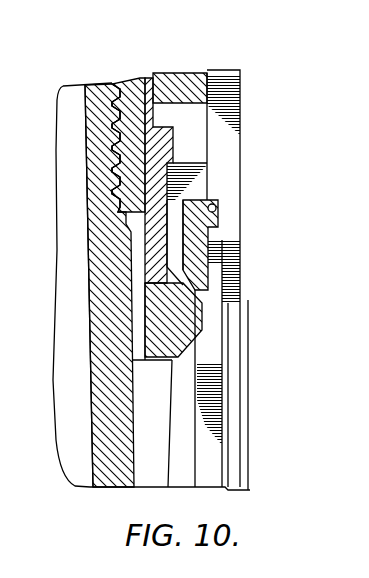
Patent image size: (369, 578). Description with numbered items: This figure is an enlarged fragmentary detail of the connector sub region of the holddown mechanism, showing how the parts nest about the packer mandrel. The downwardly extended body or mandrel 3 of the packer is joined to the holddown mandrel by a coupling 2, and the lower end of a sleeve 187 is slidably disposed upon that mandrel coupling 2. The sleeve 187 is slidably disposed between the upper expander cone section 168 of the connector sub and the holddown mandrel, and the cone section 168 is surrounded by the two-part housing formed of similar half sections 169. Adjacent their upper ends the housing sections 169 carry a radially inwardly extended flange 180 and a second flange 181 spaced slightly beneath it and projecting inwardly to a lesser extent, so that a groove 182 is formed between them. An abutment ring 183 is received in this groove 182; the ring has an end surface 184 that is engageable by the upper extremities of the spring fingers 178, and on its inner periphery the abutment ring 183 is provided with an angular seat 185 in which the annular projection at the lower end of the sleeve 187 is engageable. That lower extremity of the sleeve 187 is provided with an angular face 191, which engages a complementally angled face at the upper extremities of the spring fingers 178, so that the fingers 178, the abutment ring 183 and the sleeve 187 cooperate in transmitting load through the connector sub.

The coupling 2 is at (123, 78).
The mandrel 3 is at (133, 378).
The upper expander cone section 168 is at (183, 78).
The housing half section 169 is at (218, 133).
The spring fingers 178 is at (215, 418).
The flange 180 is at (168, 176).
The flange 181 is at (208, 237).
The groove 182 is at (218, 205).
The abutment ring 183 is at (193, 248).
The end surface 184 is at (197, 308).
The angular seat 185 is at (165, 280).
The sleeve 187 is at (147, 195).
The angular face 191 is at (198, 357).